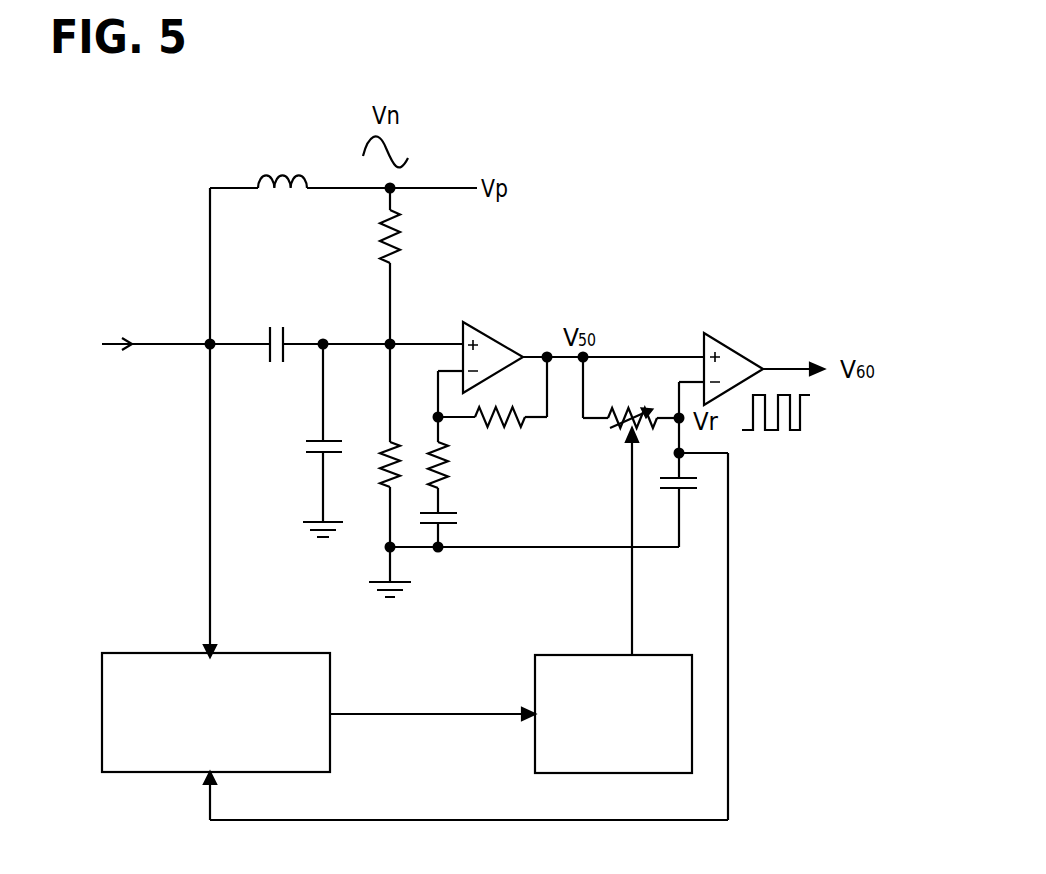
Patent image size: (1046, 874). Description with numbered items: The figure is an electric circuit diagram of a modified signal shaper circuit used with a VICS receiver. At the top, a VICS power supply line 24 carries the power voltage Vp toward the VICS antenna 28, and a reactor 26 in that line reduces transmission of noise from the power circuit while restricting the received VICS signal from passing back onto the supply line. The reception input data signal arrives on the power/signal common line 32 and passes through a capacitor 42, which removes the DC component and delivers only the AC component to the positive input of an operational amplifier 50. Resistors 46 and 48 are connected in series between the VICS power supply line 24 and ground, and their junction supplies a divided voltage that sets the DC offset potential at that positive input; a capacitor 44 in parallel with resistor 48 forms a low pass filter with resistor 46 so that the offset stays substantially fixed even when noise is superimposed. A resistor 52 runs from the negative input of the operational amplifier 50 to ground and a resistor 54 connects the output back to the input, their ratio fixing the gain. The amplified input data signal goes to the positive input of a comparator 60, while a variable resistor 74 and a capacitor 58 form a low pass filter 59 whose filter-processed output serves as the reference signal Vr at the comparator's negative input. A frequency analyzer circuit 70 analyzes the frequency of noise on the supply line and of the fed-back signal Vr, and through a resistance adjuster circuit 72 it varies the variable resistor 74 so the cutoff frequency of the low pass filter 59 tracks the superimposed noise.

The VICS power supply line 24 is at (424, 188).
The reactor 26 is at (263, 172).
The VICS antenna 28 is at (83, 344).
The power/signal common line 32 is at (168, 343).
The capacitor 42 is at (270, 358).
The capacitor 44 is at (310, 454).
The resistor 46 is at (399, 249).
The resistor 48 is at (397, 442).
The operational amplifier 50 is at (500, 335).
The resistor 52 is at (447, 477).
The resistor 54 is at (485, 423).
The capacitor 58 is at (687, 490).
The low pass filter 59 is at (710, 589).
The comparator 60 is at (735, 348).
The frequency analyzer circuit 70 is at (253, 652).
The resistance adjuster circuit 72 is at (557, 655).
The variable resistor 74 is at (618, 433).